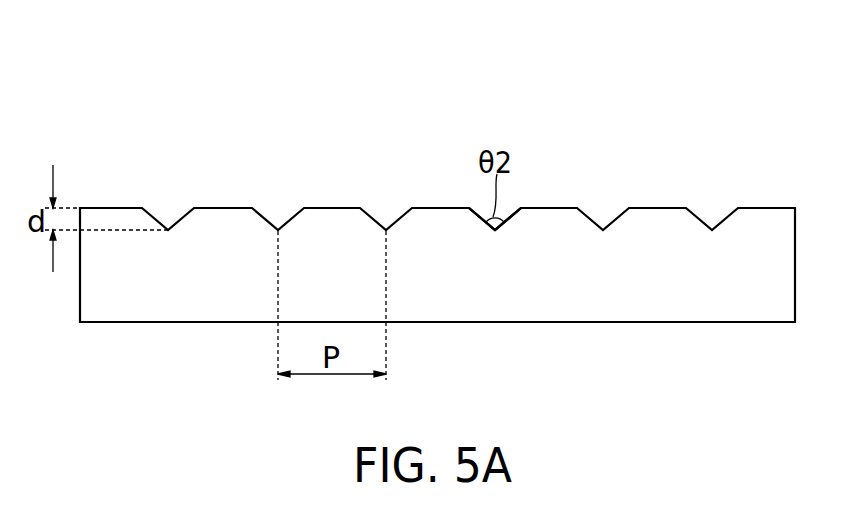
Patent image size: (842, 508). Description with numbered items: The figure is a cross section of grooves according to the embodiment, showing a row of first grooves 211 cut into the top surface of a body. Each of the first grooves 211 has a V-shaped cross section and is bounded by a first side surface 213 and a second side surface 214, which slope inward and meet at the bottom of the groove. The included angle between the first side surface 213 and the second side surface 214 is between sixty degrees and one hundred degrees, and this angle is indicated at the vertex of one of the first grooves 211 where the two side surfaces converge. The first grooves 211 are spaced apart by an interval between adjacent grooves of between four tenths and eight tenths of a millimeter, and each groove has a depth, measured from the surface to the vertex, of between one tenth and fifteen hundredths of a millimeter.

The first groove 211 is at (613, 72).
The first side surface 213 is at (487, 217).
The second side surface 214 is at (503, 220).